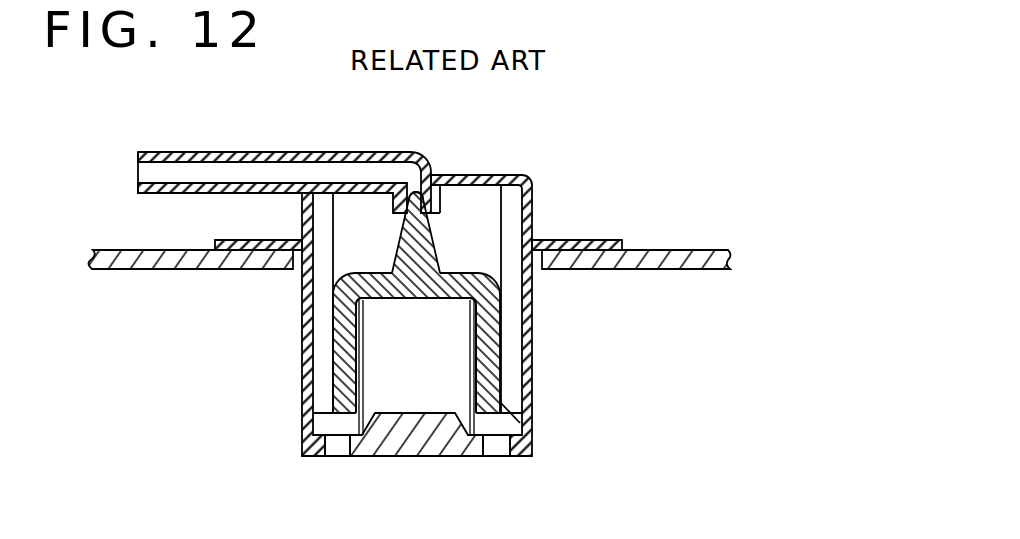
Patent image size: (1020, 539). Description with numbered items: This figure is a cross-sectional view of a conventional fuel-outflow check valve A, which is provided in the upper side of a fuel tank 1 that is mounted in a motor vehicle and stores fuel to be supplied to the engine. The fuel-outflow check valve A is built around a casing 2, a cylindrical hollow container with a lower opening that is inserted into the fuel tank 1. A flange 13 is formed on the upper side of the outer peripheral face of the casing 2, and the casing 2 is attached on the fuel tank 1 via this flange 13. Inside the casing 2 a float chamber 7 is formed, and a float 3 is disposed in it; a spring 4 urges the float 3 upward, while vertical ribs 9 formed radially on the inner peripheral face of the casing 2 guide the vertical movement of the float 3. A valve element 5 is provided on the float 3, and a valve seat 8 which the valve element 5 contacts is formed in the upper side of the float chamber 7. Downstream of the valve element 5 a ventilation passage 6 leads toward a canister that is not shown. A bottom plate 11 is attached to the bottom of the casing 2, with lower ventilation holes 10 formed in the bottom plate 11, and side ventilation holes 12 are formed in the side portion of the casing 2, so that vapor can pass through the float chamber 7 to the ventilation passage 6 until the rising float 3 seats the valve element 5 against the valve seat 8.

The fuel tank 1 is at (707, 250).
The casing 2 is at (297, 383).
The float 3 is at (493, 350).
The spring 4 is at (472, 392).
The valve element 5 is at (436, 242).
The ventilation passage 6 is at (232, 152).
The float chamber 7 is at (378, 342).
The valve seat 8 is at (426, 192).
The vertical ribs 9 is at (515, 312).
The lower ventilation holes 10 is at (498, 447).
The bottom plate 11 is at (426, 440).
The side ventilation holes 12 is at (303, 283).
The flange 13 is at (608, 240).
The fuel-outflow check valve A is at (563, 173).